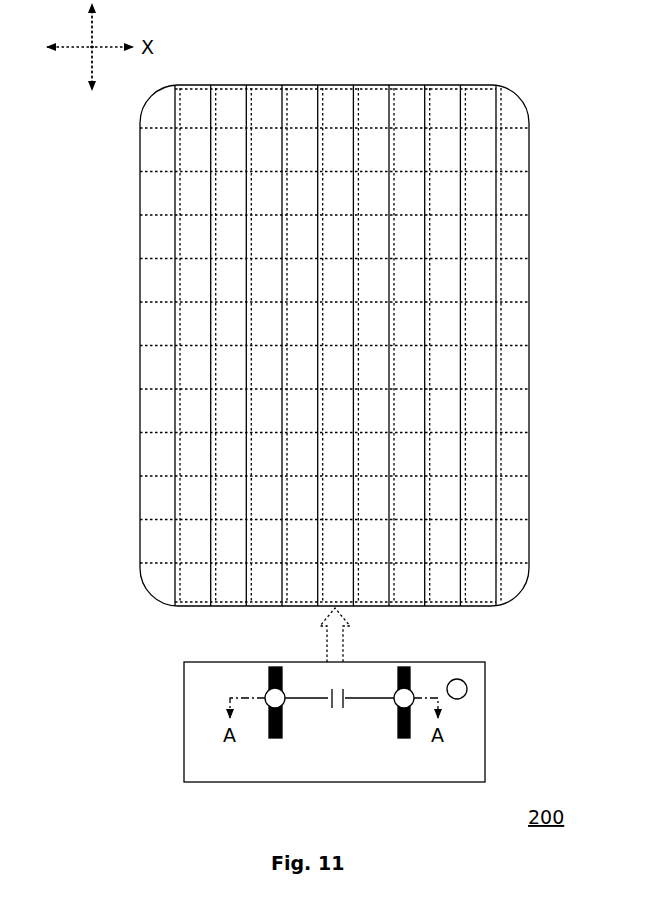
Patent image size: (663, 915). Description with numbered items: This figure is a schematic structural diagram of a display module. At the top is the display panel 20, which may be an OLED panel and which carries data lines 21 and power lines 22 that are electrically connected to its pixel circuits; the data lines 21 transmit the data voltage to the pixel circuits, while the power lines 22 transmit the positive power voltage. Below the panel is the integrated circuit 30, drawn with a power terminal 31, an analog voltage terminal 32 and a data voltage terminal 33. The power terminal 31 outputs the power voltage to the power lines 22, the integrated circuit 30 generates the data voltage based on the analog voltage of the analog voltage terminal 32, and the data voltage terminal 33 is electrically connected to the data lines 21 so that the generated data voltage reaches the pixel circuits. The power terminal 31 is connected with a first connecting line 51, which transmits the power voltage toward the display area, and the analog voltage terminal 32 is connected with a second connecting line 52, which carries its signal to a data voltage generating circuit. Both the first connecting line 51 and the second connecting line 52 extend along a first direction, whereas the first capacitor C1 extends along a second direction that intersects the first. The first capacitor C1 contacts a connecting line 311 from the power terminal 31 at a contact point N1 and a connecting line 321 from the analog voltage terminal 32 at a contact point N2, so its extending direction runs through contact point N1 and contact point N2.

The display panel 20 is at (522, 596).
The data lines 21 is at (316, 100).
The power lines 22 is at (377, 127).
The integrated circuit 30 is at (485, 715).
The power terminal 31 is at (268, 690).
The analog voltage terminal 32 is at (411, 690).
The data voltage terminal 33 is at (463, 680).
The connecting line 311 is at (297, 698).
The connecting line 321 is at (372, 698).
The first connecting line 51 is at (276, 738).
The second connecting line 52 is at (405, 738).
The first capacitor C1 is at (334, 688).
The contact point N1 is at (327, 701).
The contact point N2 is at (347, 701).